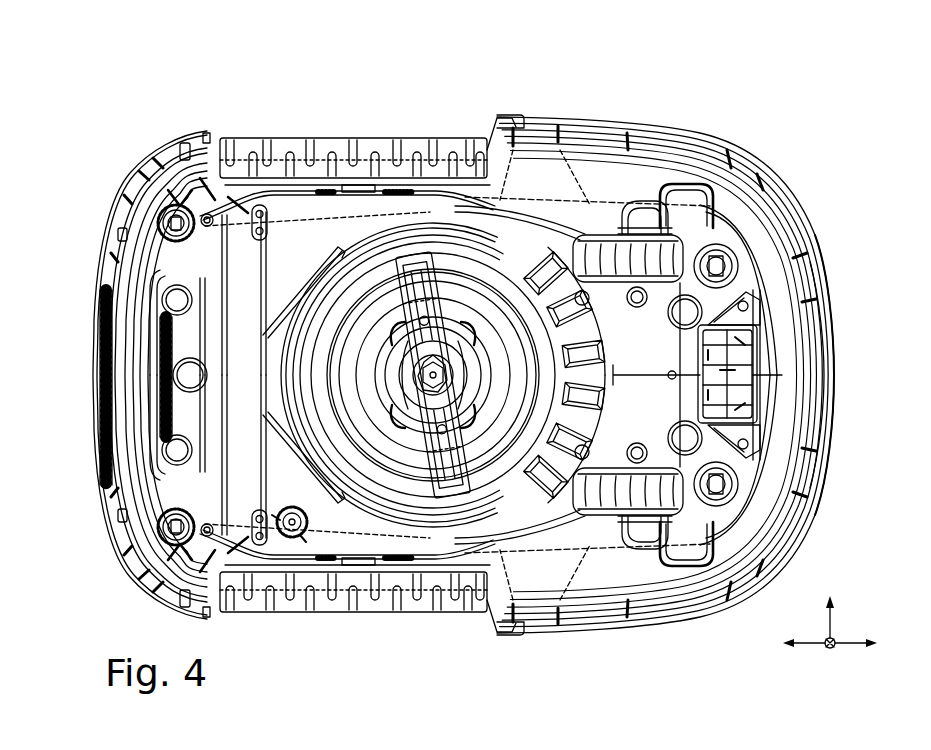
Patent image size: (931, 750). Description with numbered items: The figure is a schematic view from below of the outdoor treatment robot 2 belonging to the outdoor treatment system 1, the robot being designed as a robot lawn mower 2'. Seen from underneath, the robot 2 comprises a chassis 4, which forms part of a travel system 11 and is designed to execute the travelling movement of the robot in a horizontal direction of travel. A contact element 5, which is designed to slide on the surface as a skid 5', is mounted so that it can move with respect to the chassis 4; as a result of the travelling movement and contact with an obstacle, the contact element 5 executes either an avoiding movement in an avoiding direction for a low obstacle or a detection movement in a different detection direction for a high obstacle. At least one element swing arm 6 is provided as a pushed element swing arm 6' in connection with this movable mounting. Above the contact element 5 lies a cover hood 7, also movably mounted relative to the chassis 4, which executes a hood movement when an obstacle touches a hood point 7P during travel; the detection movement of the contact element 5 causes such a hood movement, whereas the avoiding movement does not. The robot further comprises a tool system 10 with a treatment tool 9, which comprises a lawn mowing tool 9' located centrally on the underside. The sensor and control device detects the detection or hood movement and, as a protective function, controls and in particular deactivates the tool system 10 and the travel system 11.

The outdoor treatment system 1 is at (193, 92).
The outdoor treatment robot 2 is at (152, 130).
The robot lawn mower 2' is at (166, 375).
The chassis 4 is at (367, 137).
The travel system 11 is at (300, 147).
The contact element 5 is at (790, 290).
The skid 5' is at (654, 374).
The element swing arm 6 is at (598, 128).
The pushed element swing arm 6' is at (661, 374).
The cover hood 7 is at (832, 375).
The hood point 7P is at (832, 375).
The treatment tool 9 is at (407, 273).
The lawn mowing tool 9' is at (433, 375).
The tool system 10 is at (433, 375).